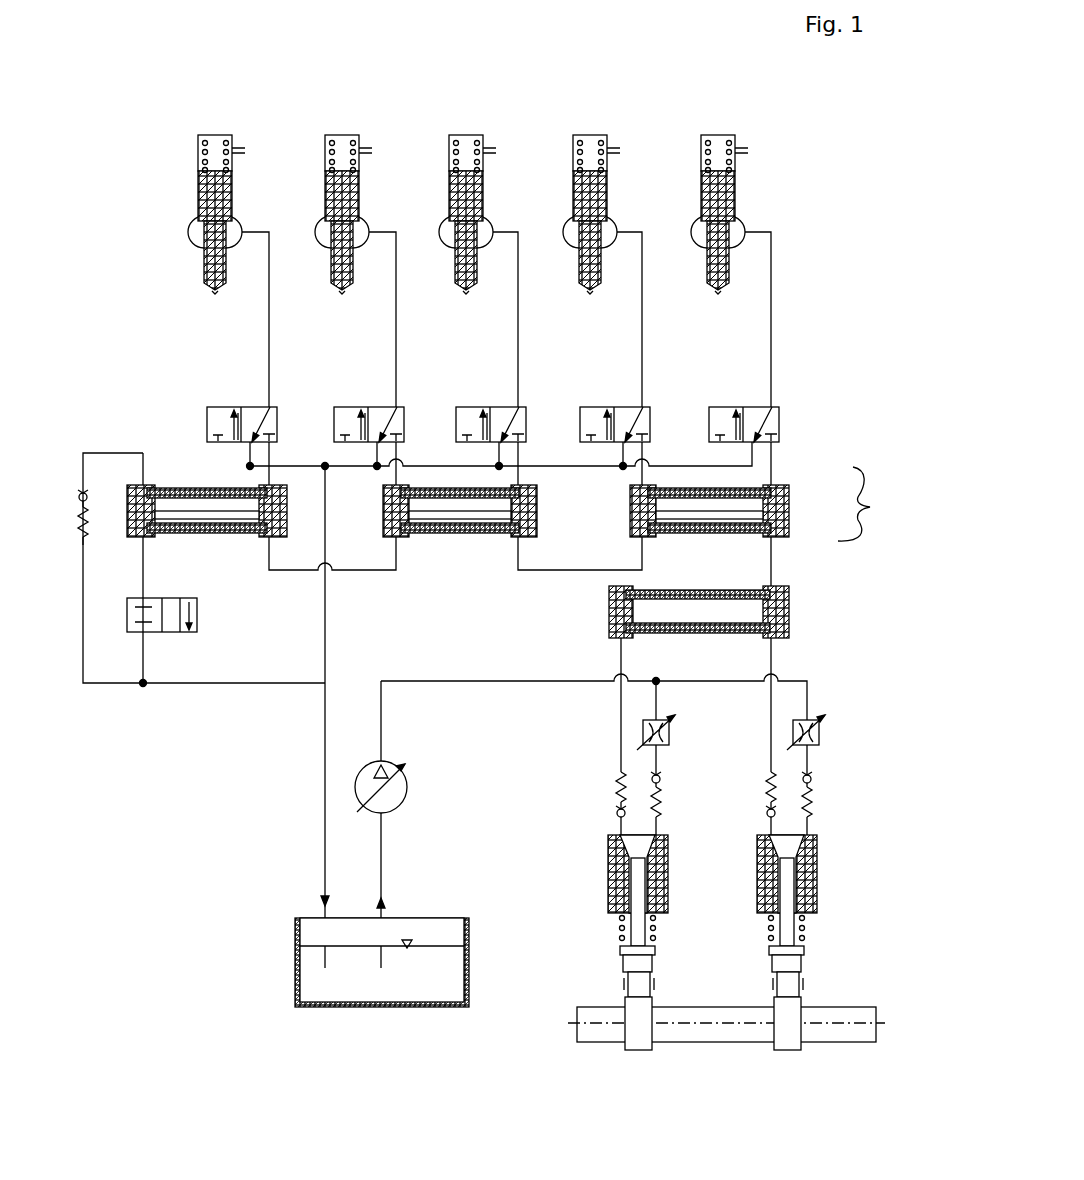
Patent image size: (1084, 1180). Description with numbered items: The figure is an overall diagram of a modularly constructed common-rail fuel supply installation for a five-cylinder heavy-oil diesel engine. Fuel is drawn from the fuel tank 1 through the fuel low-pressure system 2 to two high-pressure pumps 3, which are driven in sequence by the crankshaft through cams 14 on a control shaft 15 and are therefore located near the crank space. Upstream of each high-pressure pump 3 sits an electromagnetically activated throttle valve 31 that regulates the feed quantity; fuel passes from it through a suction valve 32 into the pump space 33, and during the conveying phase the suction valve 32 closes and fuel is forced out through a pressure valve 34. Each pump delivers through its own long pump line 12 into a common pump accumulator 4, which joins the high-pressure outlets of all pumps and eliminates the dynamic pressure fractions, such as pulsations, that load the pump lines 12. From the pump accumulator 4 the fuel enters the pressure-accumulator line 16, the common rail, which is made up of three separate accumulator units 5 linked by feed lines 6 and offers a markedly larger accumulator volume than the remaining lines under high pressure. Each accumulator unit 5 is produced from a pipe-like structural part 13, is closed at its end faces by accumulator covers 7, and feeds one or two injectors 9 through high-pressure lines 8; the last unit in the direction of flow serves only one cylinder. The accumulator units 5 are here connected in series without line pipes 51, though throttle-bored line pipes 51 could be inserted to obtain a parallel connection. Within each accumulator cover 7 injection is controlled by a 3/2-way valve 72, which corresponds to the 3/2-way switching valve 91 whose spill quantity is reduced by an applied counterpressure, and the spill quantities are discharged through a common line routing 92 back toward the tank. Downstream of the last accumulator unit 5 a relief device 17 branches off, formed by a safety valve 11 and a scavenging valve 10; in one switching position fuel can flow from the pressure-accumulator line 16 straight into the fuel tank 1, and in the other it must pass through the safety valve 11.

The fuel tank 1 is at (313, 992).
The fuel low-pressure system 2 is at (403, 805).
The high-pressure pump 3 is at (815, 870).
The pump accumulator 4 is at (657, 608).
The accumulator unit 5 is at (747, 505).
The feed line 6 is at (552, 568).
The accumulator cover 7 is at (787, 512).
The high-pressure line 8 is at (772, 312).
The injector 9 is at (770, 140).
The scavenging valve 10 is at (190, 613).
The safety valve 11 is at (98, 528).
The pump line 12 is at (773, 658).
The pipe-like structural part 13 is at (672, 537).
The cam 14 is at (793, 1008).
The control shaft 15 is at (852, 1013).
The pressure-accumulator line 16 is at (869, 504).
The relief device 17 is at (113, 420).
The throttle valve 31 is at (825, 733).
The suction valve 32 is at (820, 793).
The pump space 33 is at (787, 862).
The pressure valve 34 is at (763, 790).
The line pipe 51 is at (690, 532).
The 3/2-way valve 72 is at (772, 406).
The 3/2-way switching valve 91 is at (124, 590).
The common line routing 92 is at (324, 760).